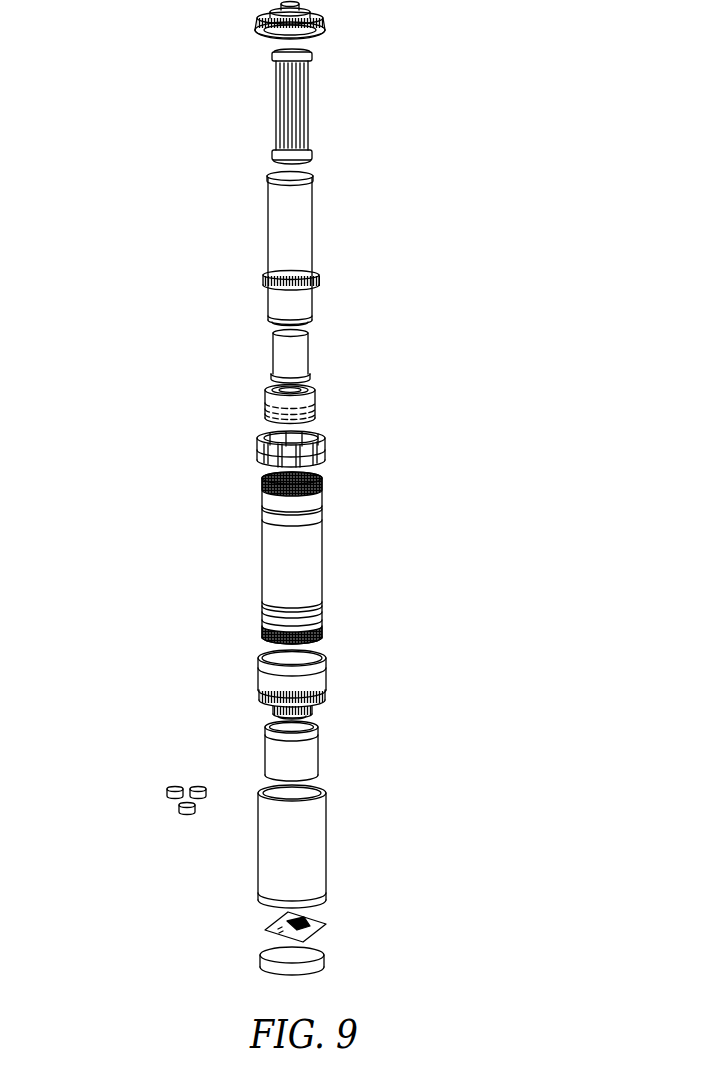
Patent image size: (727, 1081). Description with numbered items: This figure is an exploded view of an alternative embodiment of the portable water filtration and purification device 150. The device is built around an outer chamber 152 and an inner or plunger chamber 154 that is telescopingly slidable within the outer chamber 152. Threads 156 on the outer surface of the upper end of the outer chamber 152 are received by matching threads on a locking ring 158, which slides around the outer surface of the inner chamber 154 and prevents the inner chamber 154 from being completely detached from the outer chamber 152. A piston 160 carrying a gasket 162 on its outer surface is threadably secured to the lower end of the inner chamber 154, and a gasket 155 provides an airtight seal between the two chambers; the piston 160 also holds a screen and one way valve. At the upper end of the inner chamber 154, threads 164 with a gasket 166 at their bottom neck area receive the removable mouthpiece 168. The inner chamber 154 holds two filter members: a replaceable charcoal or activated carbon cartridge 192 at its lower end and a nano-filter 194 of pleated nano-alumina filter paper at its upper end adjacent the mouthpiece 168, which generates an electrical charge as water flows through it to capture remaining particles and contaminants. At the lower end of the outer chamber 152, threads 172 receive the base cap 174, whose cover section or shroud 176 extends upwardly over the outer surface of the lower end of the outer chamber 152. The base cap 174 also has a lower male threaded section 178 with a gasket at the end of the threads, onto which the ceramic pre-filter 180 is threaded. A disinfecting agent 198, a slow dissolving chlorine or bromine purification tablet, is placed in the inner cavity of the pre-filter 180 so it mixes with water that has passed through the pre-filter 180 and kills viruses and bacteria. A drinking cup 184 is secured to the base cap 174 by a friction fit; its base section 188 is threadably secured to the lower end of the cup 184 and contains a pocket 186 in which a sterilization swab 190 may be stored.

The portable water filtration and purification device 150 is at (167, 102).
The outer chamber 152 is at (255, 563).
The inner chamber 154 is at (317, 236).
The gasket 155 is at (310, 320).
The threads 156 is at (323, 452).
The locking ring 158 is at (263, 278).
The piston 160 is at (317, 406).
The gasket 162 is at (265, 410).
The threads 164 is at (316, 172).
The gasket 166 is at (312, 178).
The mouthpiece 168 is at (337, 20).
The threads 172 is at (323, 632).
The base cap 174 is at (255, 682).
The shroud 176 is at (325, 683).
The lower male threaded section 178 is at (313, 712).
The ceramic pre-filter 180 is at (260, 753).
The drinking cup 184 is at (313, 905).
The pocket 186 is at (325, 834).
The base section 188 is at (323, 965).
The sterilization swab 190 is at (327, 935).
The activated carbon cartridge 192 is at (318, 355).
The nano-filter 194 is at (323, 100).
The disinfecting agent 198 is at (165, 792).